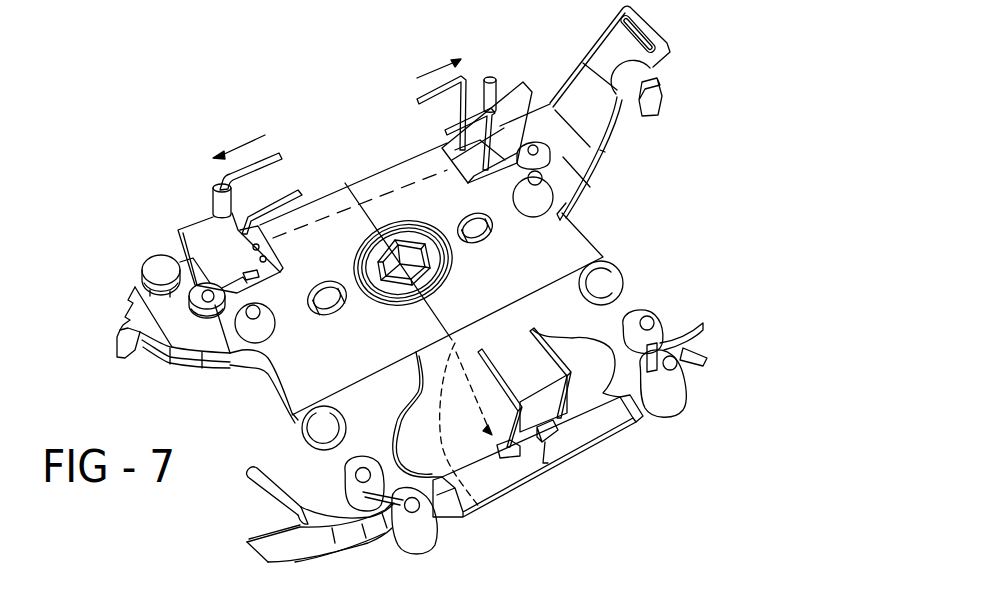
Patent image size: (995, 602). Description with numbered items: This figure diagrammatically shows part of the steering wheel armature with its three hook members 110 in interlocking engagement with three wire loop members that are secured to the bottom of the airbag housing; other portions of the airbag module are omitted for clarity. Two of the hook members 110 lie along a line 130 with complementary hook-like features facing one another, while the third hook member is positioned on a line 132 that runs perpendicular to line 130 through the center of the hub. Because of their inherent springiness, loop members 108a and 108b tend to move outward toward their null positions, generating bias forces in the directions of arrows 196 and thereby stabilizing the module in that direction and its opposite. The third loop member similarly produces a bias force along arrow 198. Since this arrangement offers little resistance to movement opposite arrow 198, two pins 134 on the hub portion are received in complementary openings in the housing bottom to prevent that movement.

The hook members 110 is at (172, 223).
The line 130 is at (357, 180).
The line 132 is at (480, 508).
The pins 134 is at (217, 196).
The arrows 196 is at (251, 162).
The arrow 198 is at (467, 400).
The loop member 108a is at (251, 162).
The loop member 108b is at (444, 98).